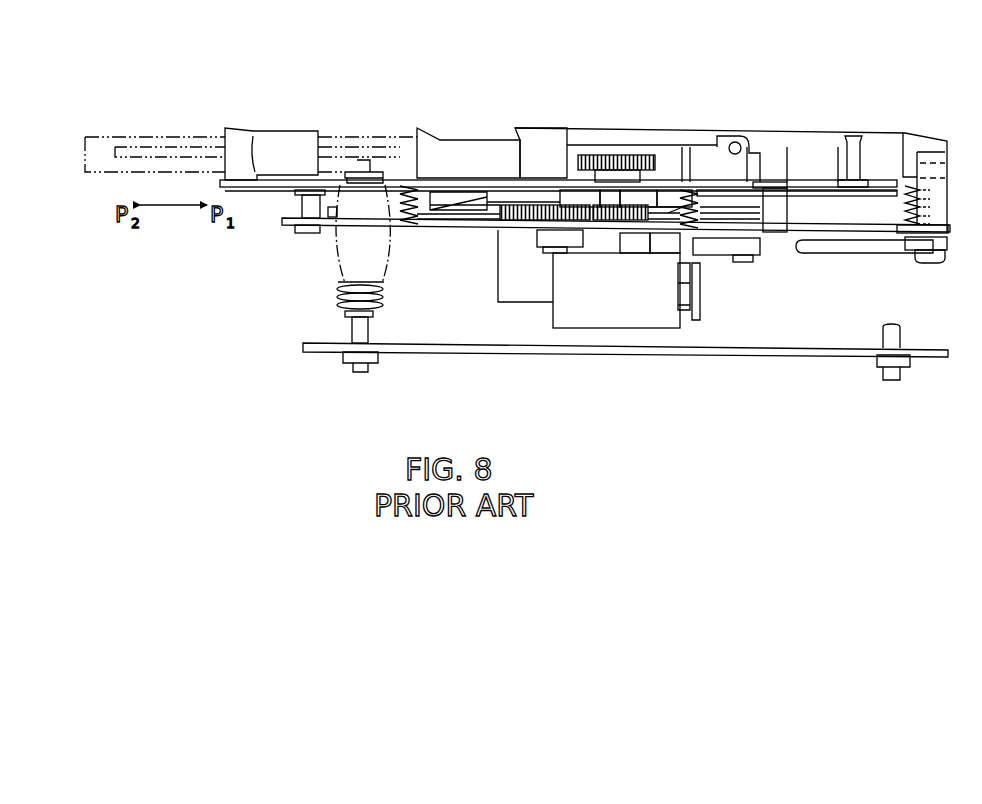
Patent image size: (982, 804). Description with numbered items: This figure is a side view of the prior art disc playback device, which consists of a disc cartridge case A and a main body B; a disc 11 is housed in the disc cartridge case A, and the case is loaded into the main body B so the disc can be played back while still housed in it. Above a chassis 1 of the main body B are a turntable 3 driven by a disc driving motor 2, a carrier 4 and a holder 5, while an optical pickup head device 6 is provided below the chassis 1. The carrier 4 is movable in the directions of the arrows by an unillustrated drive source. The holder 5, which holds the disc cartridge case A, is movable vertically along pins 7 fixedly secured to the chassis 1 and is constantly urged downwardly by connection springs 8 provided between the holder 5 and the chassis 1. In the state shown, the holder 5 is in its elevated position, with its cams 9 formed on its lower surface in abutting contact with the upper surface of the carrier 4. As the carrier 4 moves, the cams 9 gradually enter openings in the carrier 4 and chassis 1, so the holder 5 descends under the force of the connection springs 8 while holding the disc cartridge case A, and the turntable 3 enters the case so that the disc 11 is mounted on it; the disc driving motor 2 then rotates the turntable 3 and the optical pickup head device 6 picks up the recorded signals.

The disc cartridge case A is at (133, 137).
The main body B is at (826, 130).
The disc 11 is at (165, 148).
The holder 5 is at (297, 143).
The cams 9 is at (437, 190).
The turntable 3 is at (548, 195).
The connection springs 8 is at (404, 198).
The chassis 1 is at (432, 228).
The carrier 4 is at (474, 228).
The pins 7 is at (305, 217).
The disc driving motor 2 is at (503, 300).
The optical pickup head device 6 is at (600, 332).